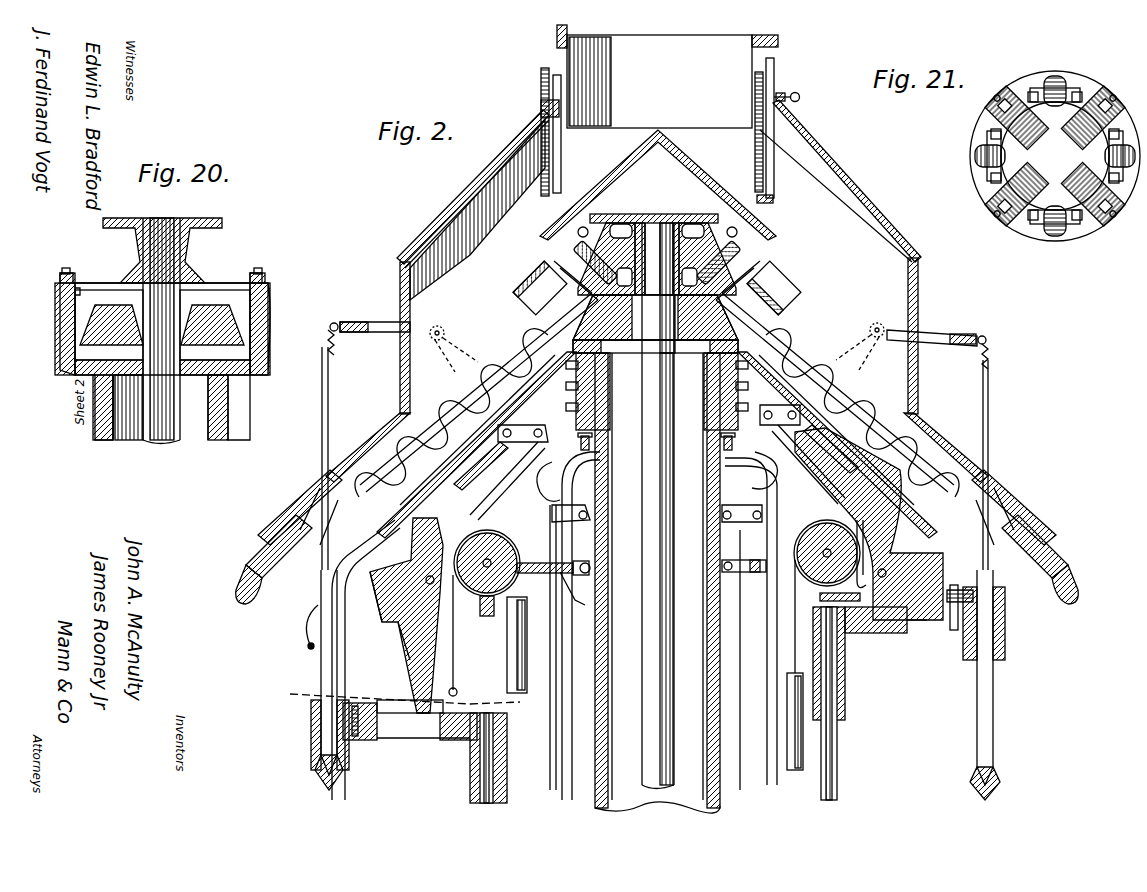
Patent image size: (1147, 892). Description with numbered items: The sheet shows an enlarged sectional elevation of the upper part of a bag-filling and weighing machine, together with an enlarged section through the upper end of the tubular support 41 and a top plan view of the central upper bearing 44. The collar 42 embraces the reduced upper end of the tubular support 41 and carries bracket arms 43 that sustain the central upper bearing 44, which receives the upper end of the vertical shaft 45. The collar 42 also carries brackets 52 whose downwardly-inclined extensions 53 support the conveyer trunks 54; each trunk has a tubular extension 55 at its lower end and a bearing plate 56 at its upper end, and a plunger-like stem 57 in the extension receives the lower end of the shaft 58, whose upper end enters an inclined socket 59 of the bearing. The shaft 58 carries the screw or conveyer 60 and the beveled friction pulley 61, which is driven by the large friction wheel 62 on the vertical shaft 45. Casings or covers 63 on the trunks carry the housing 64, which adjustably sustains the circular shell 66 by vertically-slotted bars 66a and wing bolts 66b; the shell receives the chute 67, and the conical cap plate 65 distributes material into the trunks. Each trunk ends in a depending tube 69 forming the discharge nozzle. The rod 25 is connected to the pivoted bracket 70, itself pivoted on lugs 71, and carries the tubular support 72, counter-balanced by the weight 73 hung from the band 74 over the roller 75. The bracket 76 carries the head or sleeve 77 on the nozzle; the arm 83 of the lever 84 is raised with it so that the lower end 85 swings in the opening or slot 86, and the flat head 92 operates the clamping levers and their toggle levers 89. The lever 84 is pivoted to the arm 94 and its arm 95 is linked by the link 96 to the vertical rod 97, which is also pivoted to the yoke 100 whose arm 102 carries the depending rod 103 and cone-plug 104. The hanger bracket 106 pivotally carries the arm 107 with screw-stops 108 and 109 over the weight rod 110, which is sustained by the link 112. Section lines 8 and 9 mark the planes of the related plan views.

In FIG. 2, the section line 8— 8 is at (398, 698).
In FIG. 2, the section line 9— 9 is at (820, 598).
In FIG. 2, the rod 25 is at (482, 785).
In FIG. 2, the tubular support 41 is at (606, 660).
In FIG. 20, the tubular support 41 is at (205, 432).
In FIG. 2, the collar 42 is at (606, 405).
In FIG. 20, the collar 42 is at (228, 420).
In FIG. 2, the bracket arms 43 is at (612, 344).
In FIG. 20, the bracket arms 43 is at (268, 333).
In FIG. 2, the central upper bearing 44 is at (644, 213).
In FIG. 20, the central upper bearing 44 is at (195, 258).
In FIG. 21, the central upper bearing 44 is at (1055, 156).
In FIG. 2, the shaft 45 is at (648, 728).
In FIG. 20, the shaft 45 is at (160, 430).
In FIG. 2, the brackets 52 is at (657, 430).
In FIG. 2, the extensions 53 is at (500, 478).
In FIG. 2, the conveyer trunks 54 is at (392, 430).
In FIG. 2, the tubular extension 55 is at (272, 570).
In FIG. 2, the bearing plate 56 is at (530, 318).
In FIG. 2, the plunger-like stem 57 is at (246, 592).
In FIG. 2, the shaft 58 is at (298, 532).
In FIG. 2, the inclined socket 59 is at (590, 262).
In FIG. 21, the inclined socket 59 is at (975, 156).
In FIG. 2, the screw or conveyer 60 is at (440, 412).
In FIG. 2, the beveled friction pulley 61 is at (532, 286).
In FIG. 2, the friction wheel 62 is at (655, 317).
In FIG. 20, the friction wheel 62 is at (245, 320).
In FIG. 2, the casings or covers 63 is at (312, 505).
In FIG. 2, the housing 64 is at (659, 257).
In FIG. 2, the conical cap plate 65 is at (700, 180).
In FIG. 2, the circular shell 66 is at (745, 196).
In FIG. 2, the vertically-slotted bars 66a is at (775, 72).
In FIG. 2, the wing bolts 66b is at (790, 100).
In FIG. 2, the chute 67 is at (745, 57).
In FIG. 2, the depending tube 69 is at (320, 660).
In FIG. 2, the pivoted bracket 70 is at (528, 560).
In FIG. 2, the lugs 71 is at (576, 593).
In FIG. 2, the tubular support 72 is at (472, 784).
In FIG. 2, the counter-balance weight 73 is at (530, 672).
In FIG. 2, the band 74 is at (453, 626).
In FIG. 2, the roller 75 is at (487, 550).
In FIG. 2, the bracket 76 is at (455, 740).
In FIG. 2, the head or sleeve 77 is at (310, 728).
In FIG. 2, the arm 83 is at (306, 646).
In FIG. 2, the lever 84 is at (404, 640).
In FIG. 2, the lower end 85 is at (420, 700).
In FIG. 2, the opening or slot 86 is at (405, 735).
In FIG. 2, the toggle levers 89 is at (430, 730).
In FIG. 2, the flat head 92 is at (380, 620).
In FIG. 2, the arm 94 is at (415, 545).
In FIG. 2, the arm 95 is at (658, 563).
In FIG. 2, the link 96 is at (520, 425).
In FIG. 2, the vertical rod 97 is at (572, 500).
In FIG. 2, the yoke 100 is at (657, 339).
In FIG. 2, the arm 102 is at (375, 322).
In FIG. 2, the depending rod 103 is at (321, 430).
In FIG. 2, the cone-plug 104 is at (318, 778).
In FIG. 2, the hanger bracket 106 is at (505, 465).
In FIG. 2, the arm 107 is at (560, 445).
In FIG. 2, the screw-stop 108 is at (535, 482).
In FIG. 2, the screw-stop 109 is at (592, 442).
In FIG. 2, the weight rod 110 is at (738, 770).
In FIG. 2, the link 112 is at (583, 522).